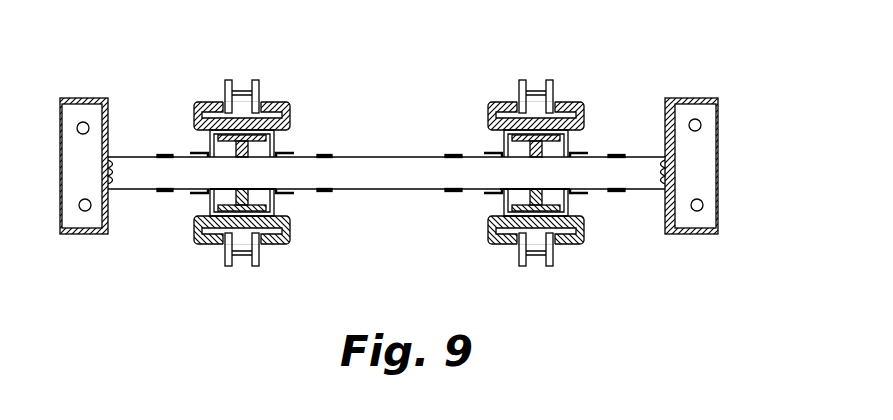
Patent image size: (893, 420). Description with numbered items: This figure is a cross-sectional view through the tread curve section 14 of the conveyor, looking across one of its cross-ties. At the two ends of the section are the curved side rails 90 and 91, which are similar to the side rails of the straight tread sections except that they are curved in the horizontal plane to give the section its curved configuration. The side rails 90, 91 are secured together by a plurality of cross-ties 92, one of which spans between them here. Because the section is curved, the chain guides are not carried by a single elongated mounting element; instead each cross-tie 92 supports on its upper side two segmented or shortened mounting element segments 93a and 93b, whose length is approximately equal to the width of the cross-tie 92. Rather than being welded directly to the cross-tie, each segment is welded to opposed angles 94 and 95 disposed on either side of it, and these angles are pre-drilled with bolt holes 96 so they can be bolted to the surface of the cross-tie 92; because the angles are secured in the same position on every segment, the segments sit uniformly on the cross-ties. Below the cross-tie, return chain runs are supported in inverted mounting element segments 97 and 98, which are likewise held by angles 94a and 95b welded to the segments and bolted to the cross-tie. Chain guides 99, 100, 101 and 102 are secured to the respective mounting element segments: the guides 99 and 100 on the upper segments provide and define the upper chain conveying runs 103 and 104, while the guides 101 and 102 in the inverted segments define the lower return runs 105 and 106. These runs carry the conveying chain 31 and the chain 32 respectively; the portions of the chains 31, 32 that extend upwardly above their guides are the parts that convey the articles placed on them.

The tread curve section 14 is at (385, 265).
The conveying chain 31 is at (272, 40).
The conveying chain 32 is at (541, 76).
The curved side rail 90 is at (62, 233).
The curved side rail 91 is at (718, 101).
The cross-tie 92 is at (386, 164).
The mounting element segment 93a is at (290, 157).
The mounting element segment 93b is at (586, 156).
The angle 94 is at (205, 150).
The angle 94a is at (210, 195).
The angle 95 is at (298, 148).
The angle 95b is at (296, 198).
The bolt hole 96 is at (166, 164).
The inverted mounting element segment 97 is at (235, 184).
The inverted mounting element segment 98 is at (530, 186).
The chain guide 99 is at (292, 103).
The chain guide 100 is at (582, 104).
The chain guide 101 is at (197, 250).
The chain guide 102 is at (487, 250).
The upper chain conveying run 103 is at (234, 57).
The upper chain conveying run 104 is at (562, 60).
The lower return run 105 is at (228, 283).
The lower return run 106 is at (555, 283).